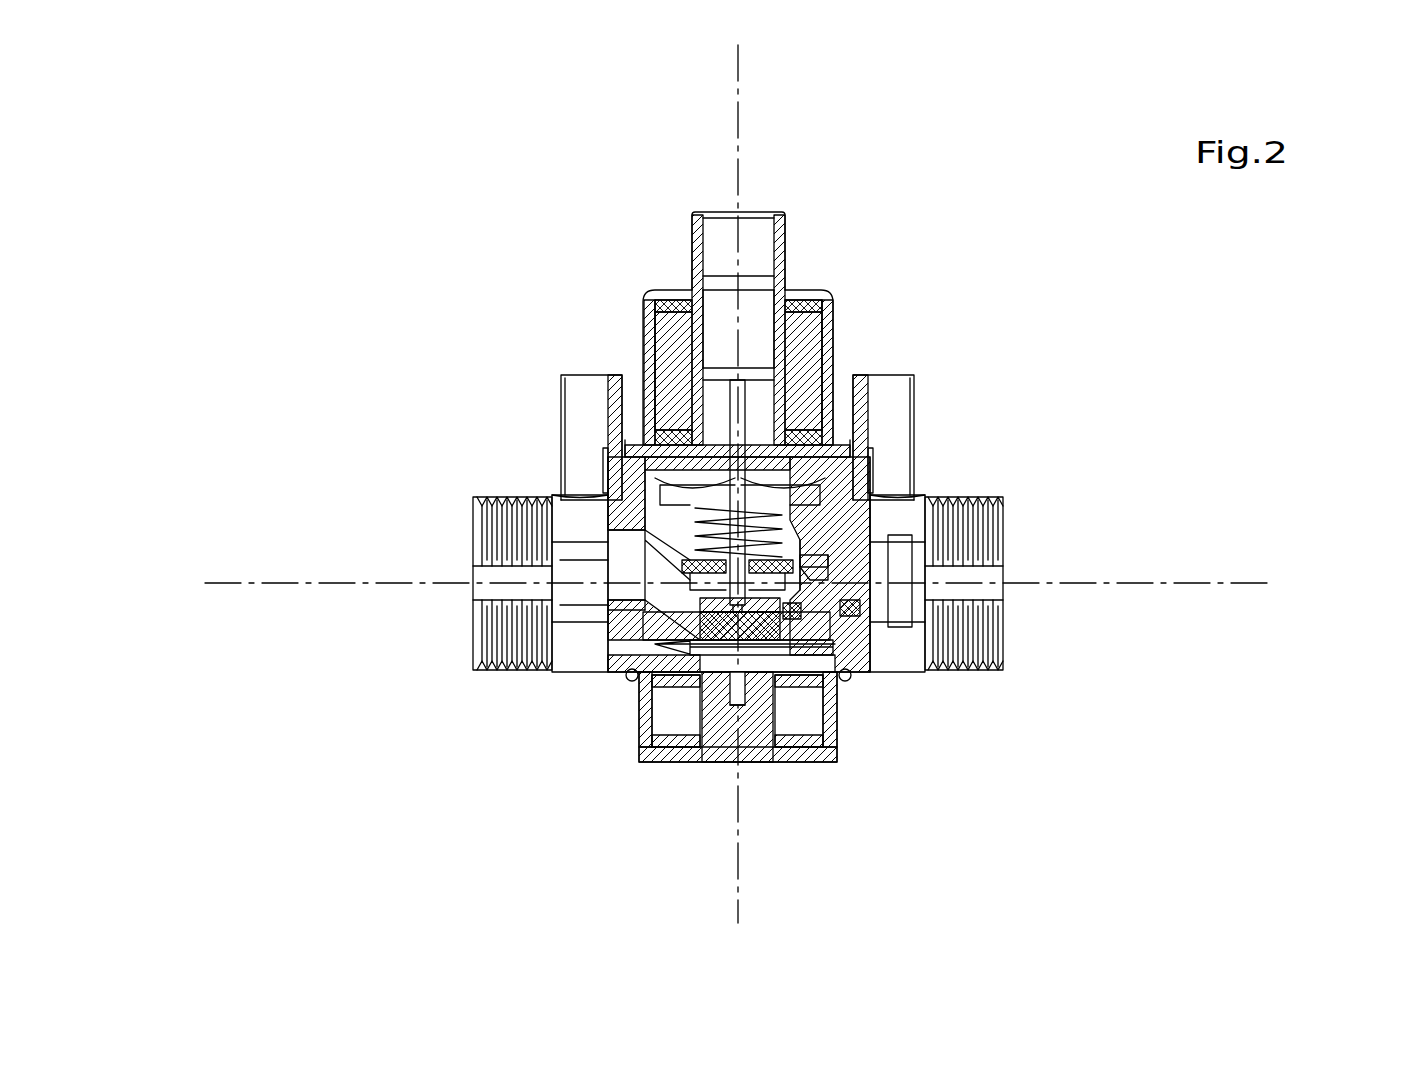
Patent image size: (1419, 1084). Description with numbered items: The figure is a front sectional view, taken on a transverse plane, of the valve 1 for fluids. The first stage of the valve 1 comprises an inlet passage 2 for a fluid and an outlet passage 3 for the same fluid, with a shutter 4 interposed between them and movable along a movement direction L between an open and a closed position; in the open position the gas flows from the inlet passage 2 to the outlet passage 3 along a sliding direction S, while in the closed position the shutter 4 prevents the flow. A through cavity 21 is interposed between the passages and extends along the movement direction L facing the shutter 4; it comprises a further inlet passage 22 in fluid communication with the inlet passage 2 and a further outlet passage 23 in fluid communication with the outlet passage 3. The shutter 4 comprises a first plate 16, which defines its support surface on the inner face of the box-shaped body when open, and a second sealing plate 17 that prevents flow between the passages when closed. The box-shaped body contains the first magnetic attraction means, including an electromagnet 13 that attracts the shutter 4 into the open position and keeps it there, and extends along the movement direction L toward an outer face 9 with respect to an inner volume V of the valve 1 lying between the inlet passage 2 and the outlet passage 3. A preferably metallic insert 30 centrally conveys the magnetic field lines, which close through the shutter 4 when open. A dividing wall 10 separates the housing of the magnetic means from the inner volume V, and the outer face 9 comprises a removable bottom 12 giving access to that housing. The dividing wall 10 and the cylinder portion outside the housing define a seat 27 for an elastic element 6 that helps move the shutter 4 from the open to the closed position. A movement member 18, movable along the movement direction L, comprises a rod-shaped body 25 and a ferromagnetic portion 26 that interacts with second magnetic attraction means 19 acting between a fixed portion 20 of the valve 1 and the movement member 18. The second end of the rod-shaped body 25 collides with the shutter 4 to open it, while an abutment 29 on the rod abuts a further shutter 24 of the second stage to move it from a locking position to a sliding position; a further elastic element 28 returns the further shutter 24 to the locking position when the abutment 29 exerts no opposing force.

The valve 1 is at (227, 167).
The inlet passage 2 is at (1015, 558).
The outlet passage 3 is at (460, 523).
The shutter 4 is at (348, 738).
The elastic element 6 is at (850, 675).
The outer face 9 is at (775, 782).
The dividing wall 10 is at (633, 680).
The removable bottom 12 is at (662, 762).
The electromagnet 13 is at (807, 717).
The first plate 16 is at (645, 668).
The second sealing plate 17 is at (660, 625).
The movement member 18 is at (665, 600).
The second magnetic attraction means 19 is at (810, 395).
The fixed portion 20 is at (645, 347).
The through cavity 21 is at (890, 610).
The further inlet passage 22 is at (865, 640).
The further outlet passage 23 is at (672, 560).
The further shutter 24 is at (603, 490).
The rod-shaped body 25 is at (833, 313).
The ferromagnetic portion 26 is at (730, 325).
The seat 27 is at (860, 672).
The further elastic element 28 is at (830, 545).
The abutment 29 is at (860, 615).
The insert 30 is at (738, 733).
The movement direction L is at (742, 157).
The sliding direction S is at (325, 583).
The inner volume V is at (640, 612).